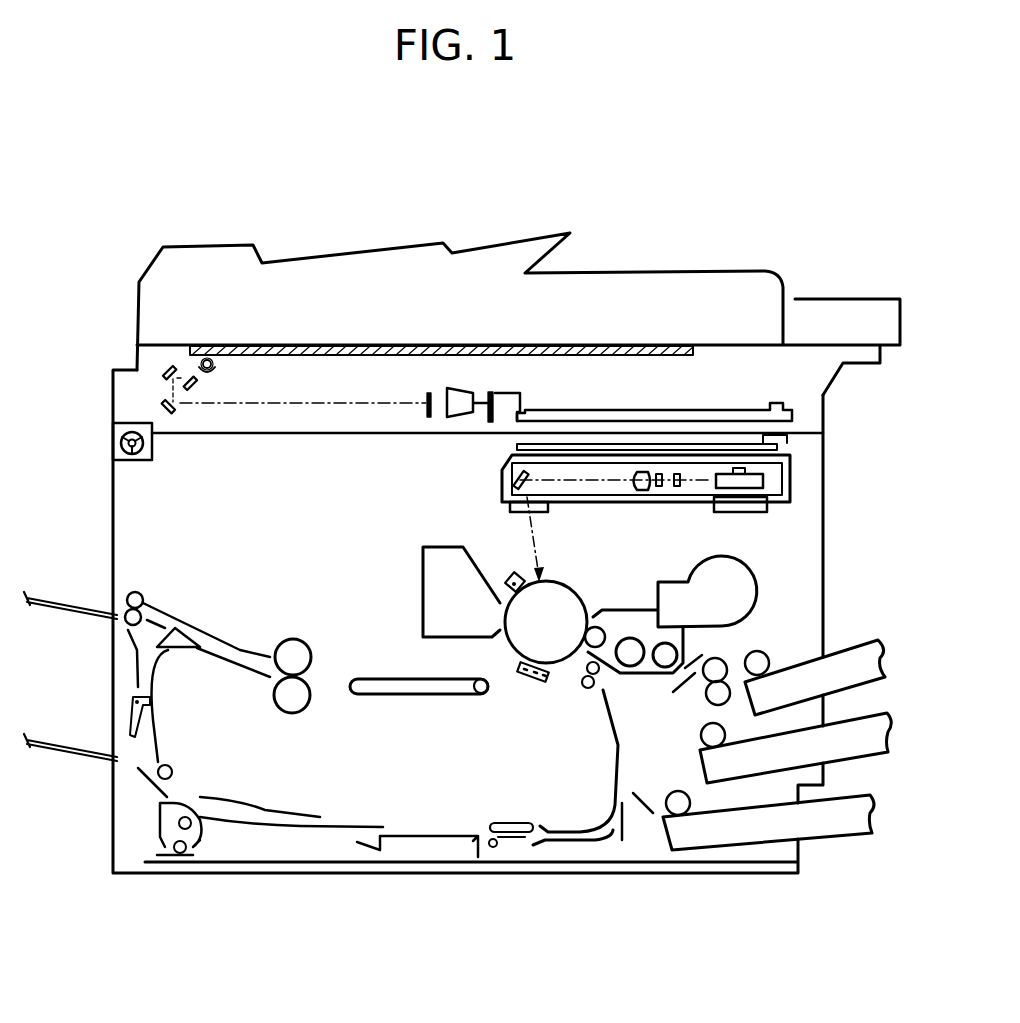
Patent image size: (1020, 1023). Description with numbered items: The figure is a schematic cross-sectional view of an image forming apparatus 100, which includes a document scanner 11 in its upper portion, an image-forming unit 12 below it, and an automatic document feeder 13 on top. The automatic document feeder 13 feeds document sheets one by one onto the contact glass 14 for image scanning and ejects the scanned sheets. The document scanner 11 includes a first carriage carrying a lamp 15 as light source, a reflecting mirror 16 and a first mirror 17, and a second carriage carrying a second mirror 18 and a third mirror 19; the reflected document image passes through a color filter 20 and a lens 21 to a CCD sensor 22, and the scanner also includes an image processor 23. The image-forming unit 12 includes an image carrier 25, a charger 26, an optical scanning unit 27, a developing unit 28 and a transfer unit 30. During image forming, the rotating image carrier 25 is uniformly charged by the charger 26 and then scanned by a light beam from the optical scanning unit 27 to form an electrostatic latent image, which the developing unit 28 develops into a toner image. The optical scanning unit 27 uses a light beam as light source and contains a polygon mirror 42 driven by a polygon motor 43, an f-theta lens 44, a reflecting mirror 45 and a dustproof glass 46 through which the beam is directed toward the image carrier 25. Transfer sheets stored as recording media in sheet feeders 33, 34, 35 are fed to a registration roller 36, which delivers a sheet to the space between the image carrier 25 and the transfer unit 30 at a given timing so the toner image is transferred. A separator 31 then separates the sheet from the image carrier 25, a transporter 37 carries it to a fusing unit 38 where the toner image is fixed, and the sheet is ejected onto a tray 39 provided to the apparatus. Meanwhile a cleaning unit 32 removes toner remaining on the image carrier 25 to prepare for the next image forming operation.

The image forming apparatus 100 is at (690, 152).
The document scanner 11 is at (124, 369).
The image-forming unit 12 is at (804, 572).
The automatic document feeder 13 is at (632, 270).
The contact glass 14 is at (547, 345).
The lamp 15 is at (207, 359).
The reflecting mirror 16 is at (217, 366).
The first mirror 17 is at (198, 385).
The second mirror 18 is at (166, 366).
The third mirror 19 is at (161, 406).
The color filter 20 is at (426, 400).
The lens 21 is at (452, 389).
The CCD sensor 22 is at (470, 418).
The image processor 23 is at (695, 408).
The image carrier 25 is at (580, 592).
The charger 26 is at (513, 576).
The optical scanning unit 27 is at (570, 503).
The developing unit 28 is at (695, 640).
The transfer unit 30 is at (547, 683).
The separator 31 is at (528, 683).
The cleaning unit 32 is at (422, 588).
The sheet feeder 33 is at (836, 657).
The sheet feeder 34 is at (842, 734).
The sheet feeder 35 is at (838, 803).
The registration roller 36 is at (589, 690).
The transporter 37 is at (395, 696).
The fusing unit 38 is at (300, 714).
The tray 39 is at (53, 598).
The polygon mirror 42 is at (712, 493).
The polygon motor 43 is at (757, 513).
The f-theta lens 44 is at (643, 492).
The reflecting mirror 45 is at (503, 472).
The dustproof glass 46 is at (509, 508).